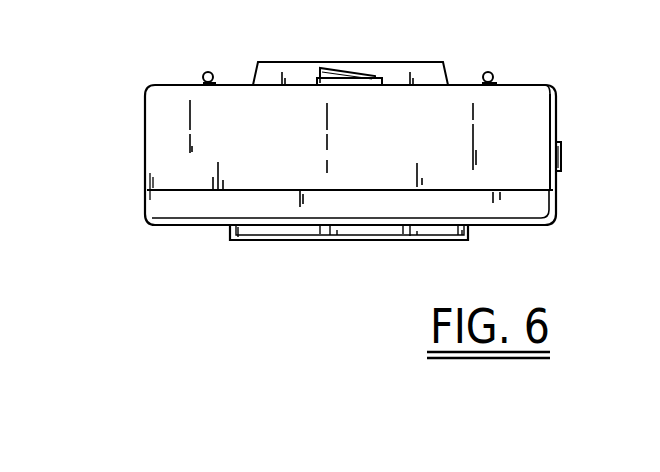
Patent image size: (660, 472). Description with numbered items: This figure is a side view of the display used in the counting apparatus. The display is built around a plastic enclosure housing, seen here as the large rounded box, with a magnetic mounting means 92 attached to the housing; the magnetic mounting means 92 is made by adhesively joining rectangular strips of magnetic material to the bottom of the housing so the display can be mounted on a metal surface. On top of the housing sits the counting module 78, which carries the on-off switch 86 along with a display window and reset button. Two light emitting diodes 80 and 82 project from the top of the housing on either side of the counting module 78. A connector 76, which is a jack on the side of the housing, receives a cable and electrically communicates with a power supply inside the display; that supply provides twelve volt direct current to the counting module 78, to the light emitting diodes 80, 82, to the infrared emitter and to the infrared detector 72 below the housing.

The infrared detector 72 is at (365, 235).
The connector 76 is at (563, 148).
The counting module 78 is at (422, 62).
The light emitting diode 80 is at (205, 72).
The light emitting diode 82 is at (495, 72).
The on-off switch 86 is at (338, 72).
The magnetic mounting means 92 is at (537, 116).